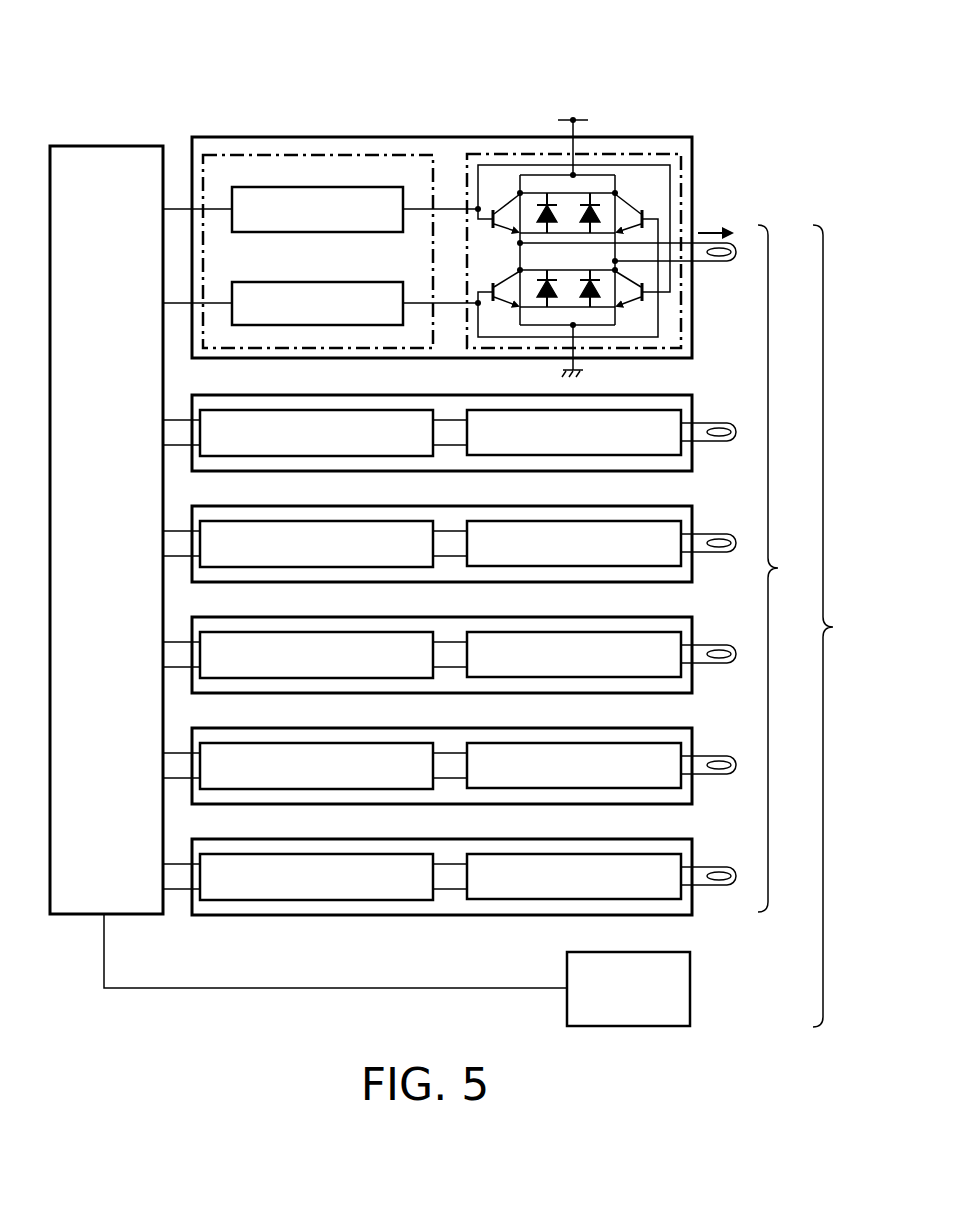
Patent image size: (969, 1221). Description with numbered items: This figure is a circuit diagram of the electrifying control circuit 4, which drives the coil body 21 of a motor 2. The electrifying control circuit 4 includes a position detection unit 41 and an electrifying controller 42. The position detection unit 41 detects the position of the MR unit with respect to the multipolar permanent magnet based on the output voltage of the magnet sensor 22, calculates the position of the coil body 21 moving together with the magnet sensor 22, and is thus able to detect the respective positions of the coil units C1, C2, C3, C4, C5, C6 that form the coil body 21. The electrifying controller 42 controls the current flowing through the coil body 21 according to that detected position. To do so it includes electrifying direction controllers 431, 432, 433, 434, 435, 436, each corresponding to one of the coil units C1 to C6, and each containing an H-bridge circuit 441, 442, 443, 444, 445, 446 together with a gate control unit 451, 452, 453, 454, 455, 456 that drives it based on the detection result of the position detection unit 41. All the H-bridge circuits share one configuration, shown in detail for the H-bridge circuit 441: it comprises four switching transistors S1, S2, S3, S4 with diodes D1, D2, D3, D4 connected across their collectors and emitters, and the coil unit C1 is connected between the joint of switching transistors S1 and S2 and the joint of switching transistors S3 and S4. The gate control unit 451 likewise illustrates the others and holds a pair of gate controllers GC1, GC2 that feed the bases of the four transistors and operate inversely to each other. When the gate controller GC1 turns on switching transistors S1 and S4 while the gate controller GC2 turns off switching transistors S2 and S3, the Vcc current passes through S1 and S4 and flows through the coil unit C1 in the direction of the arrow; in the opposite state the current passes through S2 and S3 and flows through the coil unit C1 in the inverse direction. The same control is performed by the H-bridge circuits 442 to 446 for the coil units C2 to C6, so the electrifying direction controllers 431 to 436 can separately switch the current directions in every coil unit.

The motor 2 is at (686, 626).
The electrifying control circuit 4 is at (115, 104).
The coil body 21 is at (747, 579).
The magnet sensor 22 is at (567, 968).
The position detection unit 41 is at (70, 145).
The electrifying controller 42 is at (487, 104).
The electrifying direction controller 431 is at (240, 137).
The electrifying direction controller 432 is at (427, 419).
The electrifying direction controller 433 is at (427, 530).
The electrifying direction controller 434 is at (427, 641).
The electrifying direction controller 435 is at (427, 752).
The electrifying direction controller 436 is at (427, 863).
The H-bridge circuit 441 is at (634, 153).
The H-bridge circuit 442 is at (553, 447).
The H-bridge circuit 443 is at (553, 558).
The H-bridge circuit 444 is at (553, 669).
The H-bridge circuit 445 is at (553, 780).
The H-bridge circuit 446 is at (553, 891).
The gate control unit 451 is at (318, 225).
The gate control unit 452 is at (297, 447).
The gate control unit 453 is at (297, 558).
The gate control unit 454 is at (297, 669).
The gate control unit 455 is at (297, 780).
The gate control unit 456 is at (297, 891).
The coil unit C1 is at (716, 262).
The coil unit C2 is at (716, 442).
The coil unit C3 is at (716, 553).
The coil unit C4 is at (716, 664).
The coil unit C5 is at (716, 775).
The coil unit C6 is at (716, 886).
The switching transistor S1 is at (501, 209).
The switching transistor S2 is at (501, 283).
The switching transistor S3 is at (633, 209).
The switching transistor S4 is at (629, 301).
The diode D1 is at (557, 204).
The diode D2 is at (557, 279).
The diode D3 is at (578, 217).
The diode D4 is at (578, 294).
The gate controller GC1 is at (290, 233).
The gate controller GC2 is at (396, 281).